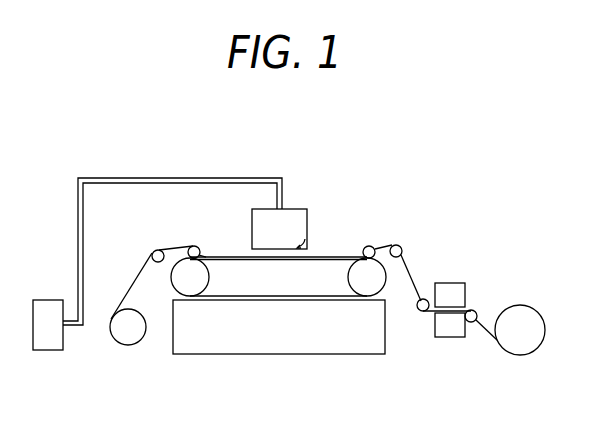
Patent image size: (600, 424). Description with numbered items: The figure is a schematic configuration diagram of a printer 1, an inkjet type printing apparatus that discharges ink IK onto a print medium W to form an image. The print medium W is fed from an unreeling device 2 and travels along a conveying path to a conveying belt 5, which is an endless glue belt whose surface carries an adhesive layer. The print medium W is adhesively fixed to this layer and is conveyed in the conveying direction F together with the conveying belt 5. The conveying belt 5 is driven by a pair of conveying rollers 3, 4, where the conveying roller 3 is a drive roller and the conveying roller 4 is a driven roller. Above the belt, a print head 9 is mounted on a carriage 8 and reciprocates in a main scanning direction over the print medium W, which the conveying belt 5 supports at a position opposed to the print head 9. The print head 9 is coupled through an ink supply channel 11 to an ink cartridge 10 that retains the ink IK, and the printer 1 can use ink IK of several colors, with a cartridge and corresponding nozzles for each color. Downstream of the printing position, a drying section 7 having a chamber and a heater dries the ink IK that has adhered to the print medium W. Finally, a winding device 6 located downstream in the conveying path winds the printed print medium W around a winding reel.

The printer 1 is at (364, 161).
The unreeling device 2 is at (143, 340).
The conveying roller 3 is at (209, 278).
The conveying roller 4 is at (382, 289).
The conveying belt 5 is at (285, 297).
The winding device 6 is at (518, 355).
The drying section 7 is at (472, 292).
The carriage 8 is at (308, 217).
The print head 9 is at (308, 242).
The ink cartridge 10 is at (45, 300).
The ink supply channel 11 is at (78, 216).
The print medium W is at (161, 250).
The ink IK is at (50, 340).
The conveying direction F is at (130, 273).